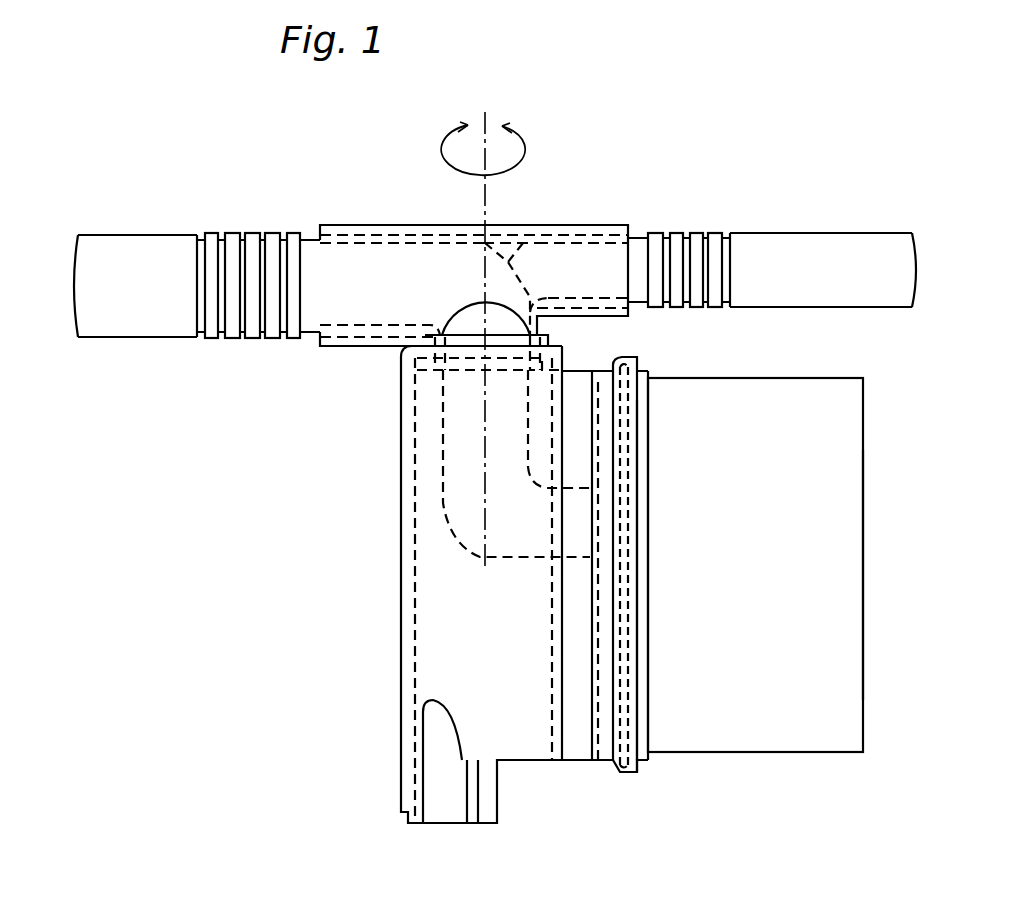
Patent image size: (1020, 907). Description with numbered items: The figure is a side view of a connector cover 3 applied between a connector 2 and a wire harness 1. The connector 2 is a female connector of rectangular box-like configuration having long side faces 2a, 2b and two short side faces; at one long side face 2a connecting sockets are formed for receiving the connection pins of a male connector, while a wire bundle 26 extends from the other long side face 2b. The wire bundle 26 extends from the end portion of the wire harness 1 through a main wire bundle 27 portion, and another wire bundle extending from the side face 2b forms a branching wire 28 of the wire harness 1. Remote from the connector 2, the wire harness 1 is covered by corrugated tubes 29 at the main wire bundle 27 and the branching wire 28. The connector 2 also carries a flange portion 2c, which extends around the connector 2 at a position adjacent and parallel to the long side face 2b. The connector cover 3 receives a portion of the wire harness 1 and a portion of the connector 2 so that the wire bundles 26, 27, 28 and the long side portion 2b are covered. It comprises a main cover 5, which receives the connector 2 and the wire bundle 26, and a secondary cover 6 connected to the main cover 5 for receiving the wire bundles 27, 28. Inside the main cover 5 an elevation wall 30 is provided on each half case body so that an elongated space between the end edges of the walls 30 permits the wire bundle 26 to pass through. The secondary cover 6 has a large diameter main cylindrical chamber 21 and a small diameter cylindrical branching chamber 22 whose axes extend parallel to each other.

The wire harness 1 is at (240, 217).
The connector 2 is at (842, 532).
The long side face 2a is at (863, 662).
The long side face 2b is at (597, 710).
The flange portion 2c is at (623, 707).
The connector cover 3 is at (390, 492).
The main cover 5 is at (394, 637).
The secondary cover 6 is at (423, 218).
The main cylindrical chamber 21 is at (360, 253).
The cylindrical branching chamber 22 is at (587, 225).
The wire bundle 26 is at (443, 427).
The main wire bundle 27 is at (395, 243).
The branching wire 28 is at (523, 243).
The corrugated tubes 29 is at (233, 340).
The elevation wall 30 is at (599, 695).